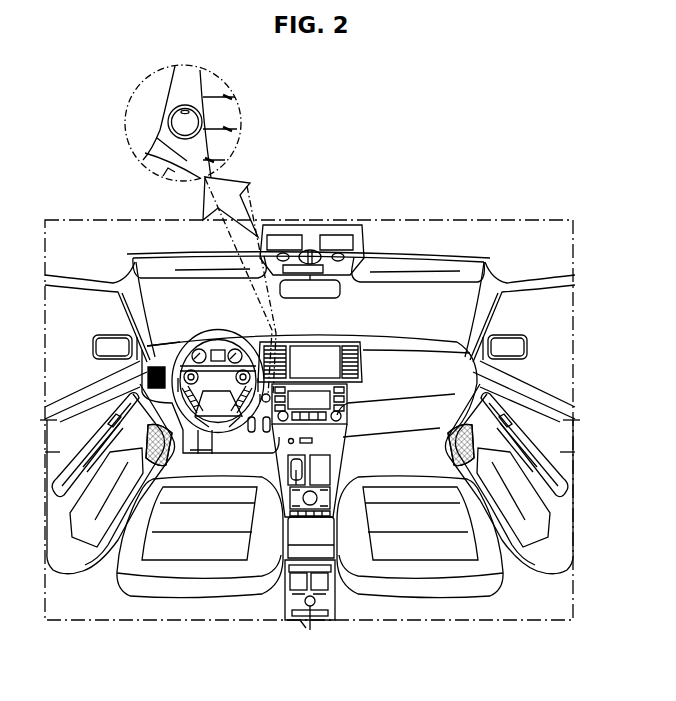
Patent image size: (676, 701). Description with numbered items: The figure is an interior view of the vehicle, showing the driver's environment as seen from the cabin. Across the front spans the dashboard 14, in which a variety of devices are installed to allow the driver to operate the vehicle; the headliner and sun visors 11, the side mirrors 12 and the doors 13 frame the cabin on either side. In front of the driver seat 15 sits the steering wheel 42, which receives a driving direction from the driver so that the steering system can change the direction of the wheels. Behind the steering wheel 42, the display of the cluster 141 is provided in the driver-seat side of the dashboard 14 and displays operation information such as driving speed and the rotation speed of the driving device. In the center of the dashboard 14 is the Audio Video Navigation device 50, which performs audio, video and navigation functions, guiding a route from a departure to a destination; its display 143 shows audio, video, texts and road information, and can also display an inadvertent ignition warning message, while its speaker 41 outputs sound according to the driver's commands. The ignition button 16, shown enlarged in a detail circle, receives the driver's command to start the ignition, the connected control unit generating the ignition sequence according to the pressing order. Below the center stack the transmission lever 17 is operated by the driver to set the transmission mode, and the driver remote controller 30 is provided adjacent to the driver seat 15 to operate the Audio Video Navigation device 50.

The sun visor 11 is at (417, 289).
The side mirror 12 is at (100, 346).
The door 13 is at (46, 455).
The dashboard 14 is at (408, 356).
The driver seat 15 is at (203, 586).
The ignition button 16 is at (133, 114).
The transmission lever 17 is at (289, 470).
The driver remote controller 30 is at (324, 488).
The speaker 41 is at (177, 447).
The steering wheel 42 is at (199, 334).
The Audio Video Navigation (AVN) device 50 is at (318, 340).
The display of a cluster 141 is at (217, 350).
The display 143 is at (296, 345).